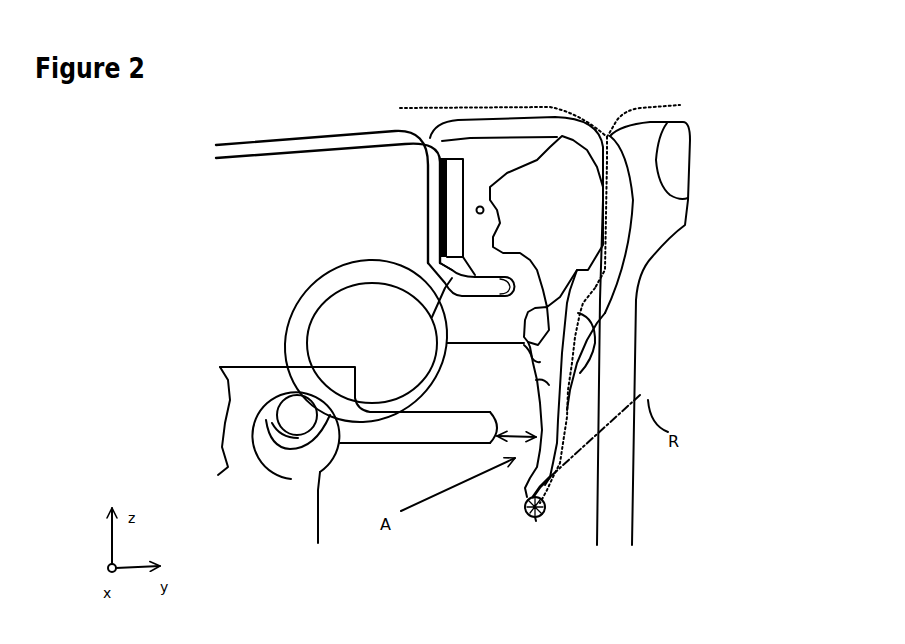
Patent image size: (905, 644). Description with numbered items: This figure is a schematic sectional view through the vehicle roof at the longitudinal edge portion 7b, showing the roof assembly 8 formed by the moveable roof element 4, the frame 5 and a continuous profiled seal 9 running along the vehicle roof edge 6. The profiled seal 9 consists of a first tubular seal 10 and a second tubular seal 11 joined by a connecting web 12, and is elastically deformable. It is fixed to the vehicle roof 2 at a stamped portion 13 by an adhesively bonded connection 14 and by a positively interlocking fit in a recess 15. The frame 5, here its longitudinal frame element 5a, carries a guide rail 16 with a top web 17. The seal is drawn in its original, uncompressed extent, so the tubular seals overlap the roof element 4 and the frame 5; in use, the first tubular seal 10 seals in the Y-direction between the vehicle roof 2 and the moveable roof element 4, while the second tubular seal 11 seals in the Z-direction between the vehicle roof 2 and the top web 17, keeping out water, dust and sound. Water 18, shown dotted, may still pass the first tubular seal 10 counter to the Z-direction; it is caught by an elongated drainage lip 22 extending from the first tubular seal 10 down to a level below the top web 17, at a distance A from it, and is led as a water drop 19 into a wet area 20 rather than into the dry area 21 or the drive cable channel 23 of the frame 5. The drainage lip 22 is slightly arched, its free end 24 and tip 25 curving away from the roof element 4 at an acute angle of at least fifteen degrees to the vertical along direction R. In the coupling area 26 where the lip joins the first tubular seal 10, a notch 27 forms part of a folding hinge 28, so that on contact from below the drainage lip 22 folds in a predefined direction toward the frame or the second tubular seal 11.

The vehicle roof 2 is at (258, 148).
The moveable roof element 4 is at (655, 194).
The frame 5 is at (248, 538).
The longitudinal frame element 5a is at (259, 503).
The vehicle roof edge 6 is at (356, 75).
The longitudinal edge portion 7b is at (372, 117).
The roof assembly 8 is at (744, 96).
The profiled seal 9 is at (557, 112).
The first tubular seal 10 is at (555, 221).
The second tubular seal 11 is at (375, 342).
The connecting web 12 is at (502, 334).
The stamped portion 13 is at (429, 214).
The adhesively bonded connection 14 is at (447, 182).
The recess 15 is at (428, 263).
The guide rail 16 is at (458, 402).
The top web 17 is at (384, 444).
The water 18 is at (583, 110).
The water drop 19 is at (536, 520).
The wet area 20 is at (462, 617).
The dry area 21 is at (207, 352).
The drainage lip 22 is at (550, 383).
The drive cable channel 23 is at (279, 459).
The free end 24 is at (548, 480).
The tip 25 is at (521, 491).
The coupling area 26 is at (588, 323).
The notch 27 is at (528, 351).
The folding hinge 28 is at (532, 382).